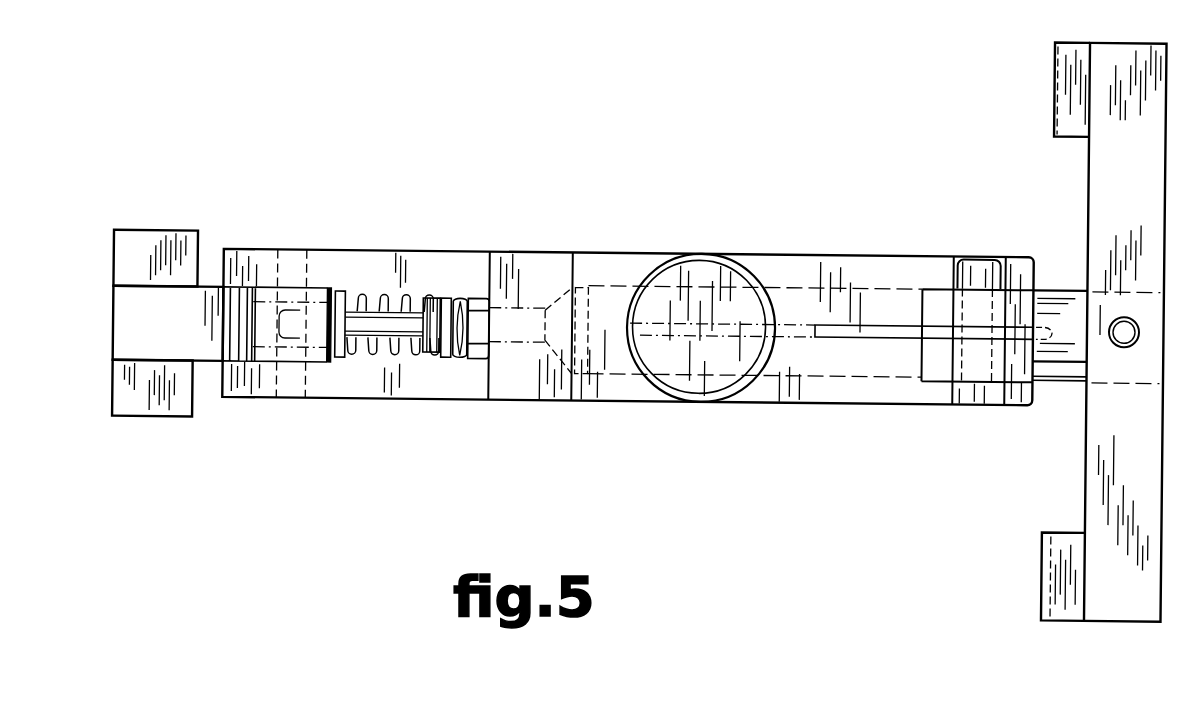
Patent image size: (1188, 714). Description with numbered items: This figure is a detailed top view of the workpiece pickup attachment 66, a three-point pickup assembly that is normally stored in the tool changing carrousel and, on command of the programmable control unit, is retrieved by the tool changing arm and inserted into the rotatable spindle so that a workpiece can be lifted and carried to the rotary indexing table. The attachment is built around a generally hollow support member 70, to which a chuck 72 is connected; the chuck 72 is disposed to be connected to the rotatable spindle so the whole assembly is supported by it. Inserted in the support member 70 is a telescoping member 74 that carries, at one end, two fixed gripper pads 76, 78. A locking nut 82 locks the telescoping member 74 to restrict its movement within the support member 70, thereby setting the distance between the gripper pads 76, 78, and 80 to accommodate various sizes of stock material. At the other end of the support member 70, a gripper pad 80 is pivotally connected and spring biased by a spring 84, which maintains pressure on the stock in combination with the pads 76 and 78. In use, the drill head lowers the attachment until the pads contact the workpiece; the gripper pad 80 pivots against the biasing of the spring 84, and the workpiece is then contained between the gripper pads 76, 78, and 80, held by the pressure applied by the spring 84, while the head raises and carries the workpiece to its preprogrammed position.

The workpiece pickup attachment 66 is at (610, 475).
The support member 70 is at (897, 402).
The chuck 72 is at (713, 257).
The telescoping member 74 is at (1063, 363).
The gripper pad 76 is at (1055, 90).
The gripper pad 78 is at (1048, 571).
The gripper pad 80 is at (192, 401).
The locking nut 82 is at (973, 256).
The spring 84 is at (408, 302).